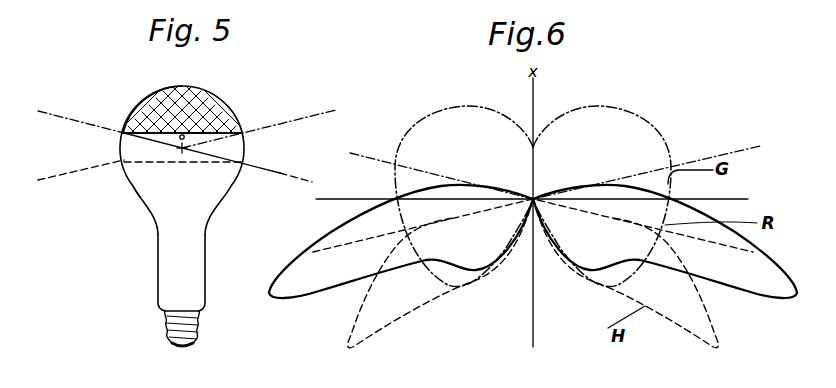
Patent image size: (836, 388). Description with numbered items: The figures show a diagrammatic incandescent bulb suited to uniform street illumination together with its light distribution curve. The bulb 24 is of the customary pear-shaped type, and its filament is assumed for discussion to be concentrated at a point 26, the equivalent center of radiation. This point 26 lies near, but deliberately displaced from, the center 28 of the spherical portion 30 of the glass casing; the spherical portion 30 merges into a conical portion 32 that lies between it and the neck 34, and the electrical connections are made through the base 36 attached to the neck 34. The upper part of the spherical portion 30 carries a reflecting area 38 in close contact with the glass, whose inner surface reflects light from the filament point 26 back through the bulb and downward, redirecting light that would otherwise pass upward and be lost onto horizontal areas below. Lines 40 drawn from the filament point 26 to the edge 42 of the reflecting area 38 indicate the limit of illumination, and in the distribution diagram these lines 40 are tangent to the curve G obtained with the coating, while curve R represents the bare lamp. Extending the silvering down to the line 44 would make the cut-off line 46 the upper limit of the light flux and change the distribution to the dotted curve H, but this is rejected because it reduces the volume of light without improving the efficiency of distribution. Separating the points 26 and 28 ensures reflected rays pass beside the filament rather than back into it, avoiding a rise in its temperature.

In FIG. 5, the bulb 24 is at (162, 237).
In FIG. 5, the filament point 26 is at (182, 148).
In FIG. 5, the center of the spherical portion 28 is at (184, 135).
In FIG. 5, the spherical portion 30 is at (149, 91).
In FIG. 5, the conical portion 32 is at (137, 191).
In FIG. 5, the neck 34 is at (203, 270).
In FIG. 5, the base 36 is at (165, 322).
In FIG. 5, the reflecting area 38 is at (128, 111).
In FIG. 5, the lines indicating limit of illumination 40 is at (293, 121).
In FIG. 6, the lines indicating limit of illumination 40 is at (704, 158).
In FIG. 5, the edge of the reflecting surface 42 is at (243, 133).
In FIG. 5, the line 44 is at (197, 162).
In FIG. 5, the cut-off line 46 is at (279, 174).
In FIG. 6, the cut-off line 46 is at (735, 252).